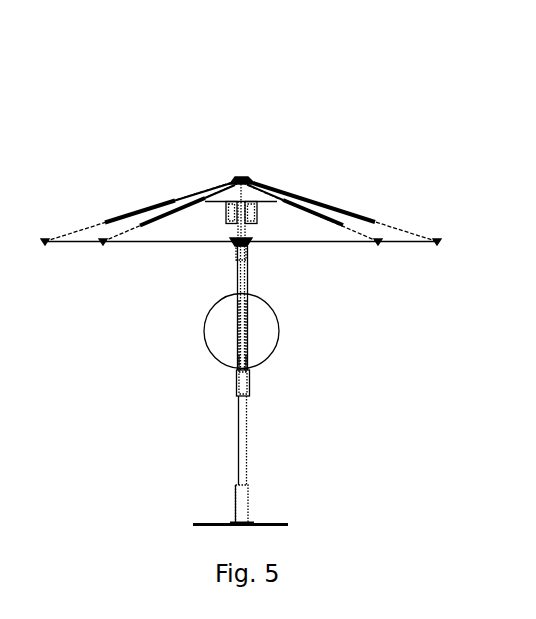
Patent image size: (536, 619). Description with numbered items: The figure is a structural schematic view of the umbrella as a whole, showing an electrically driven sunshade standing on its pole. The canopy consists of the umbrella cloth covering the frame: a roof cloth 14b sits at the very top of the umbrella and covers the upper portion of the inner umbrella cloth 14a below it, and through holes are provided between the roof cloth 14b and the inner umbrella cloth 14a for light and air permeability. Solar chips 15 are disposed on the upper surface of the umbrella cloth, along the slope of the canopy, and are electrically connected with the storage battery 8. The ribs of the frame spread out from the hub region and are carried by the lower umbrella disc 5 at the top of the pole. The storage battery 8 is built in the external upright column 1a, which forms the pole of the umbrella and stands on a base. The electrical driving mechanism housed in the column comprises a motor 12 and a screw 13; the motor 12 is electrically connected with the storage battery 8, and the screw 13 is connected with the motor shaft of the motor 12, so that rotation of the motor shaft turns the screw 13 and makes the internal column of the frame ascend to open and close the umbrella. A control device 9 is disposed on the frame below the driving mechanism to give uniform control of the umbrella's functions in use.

The external upright column 1a is at (378, 507).
The lower umbrella disc 5 is at (230, 246).
The storage battery 8 is at (365, 377).
The control device 9 is at (370, 407).
The motor 12 is at (365, 348).
The screw 13 is at (360, 313).
The inner umbrella cloth 14a is at (165, 242).
The roof cloth 14b is at (263, 186).
The solar chips 15 is at (86, 128).